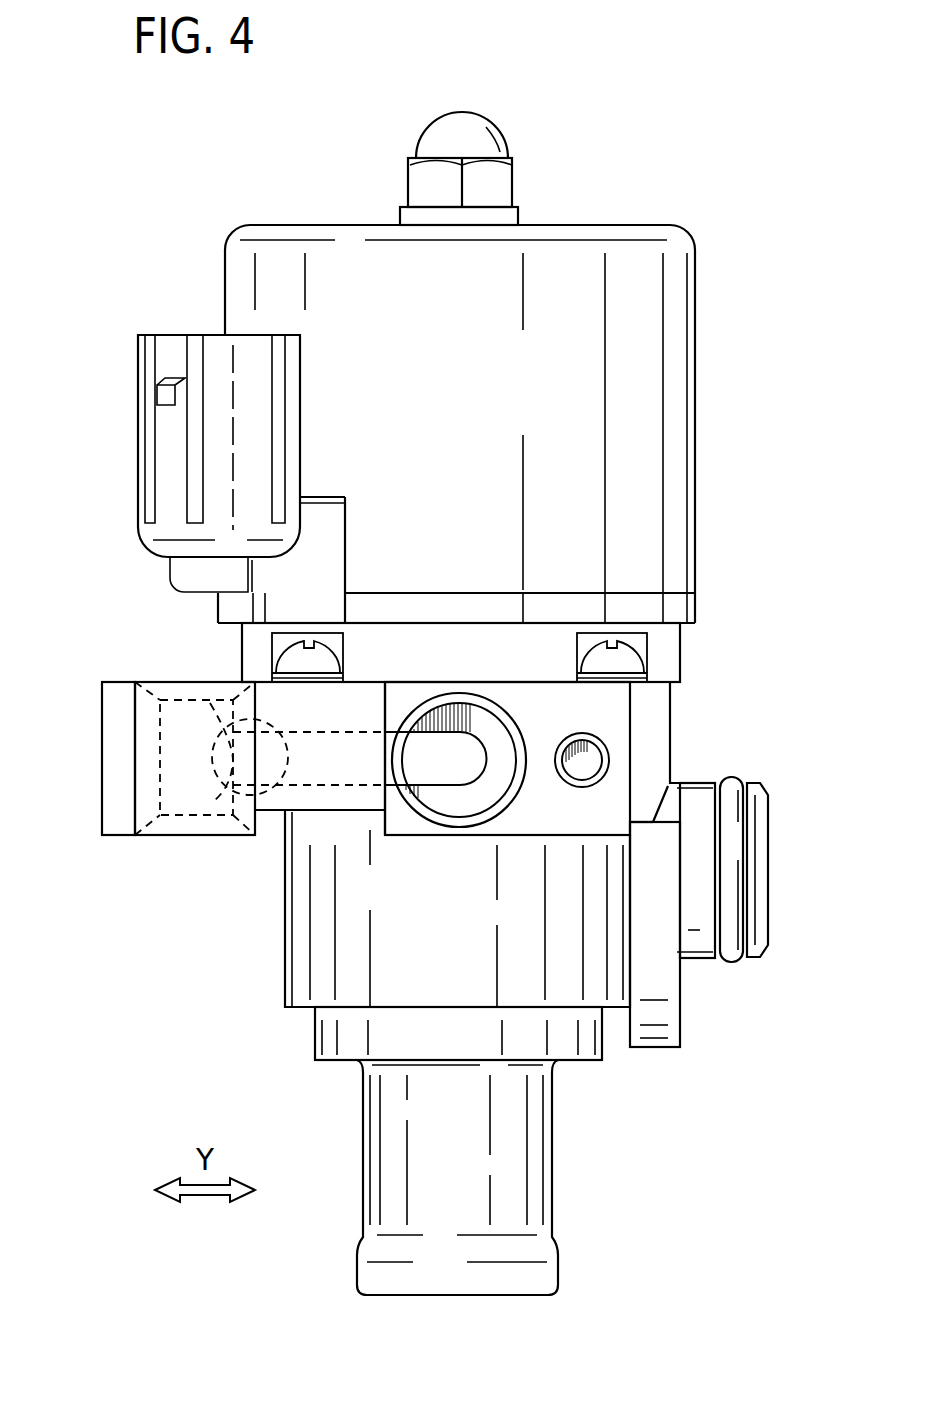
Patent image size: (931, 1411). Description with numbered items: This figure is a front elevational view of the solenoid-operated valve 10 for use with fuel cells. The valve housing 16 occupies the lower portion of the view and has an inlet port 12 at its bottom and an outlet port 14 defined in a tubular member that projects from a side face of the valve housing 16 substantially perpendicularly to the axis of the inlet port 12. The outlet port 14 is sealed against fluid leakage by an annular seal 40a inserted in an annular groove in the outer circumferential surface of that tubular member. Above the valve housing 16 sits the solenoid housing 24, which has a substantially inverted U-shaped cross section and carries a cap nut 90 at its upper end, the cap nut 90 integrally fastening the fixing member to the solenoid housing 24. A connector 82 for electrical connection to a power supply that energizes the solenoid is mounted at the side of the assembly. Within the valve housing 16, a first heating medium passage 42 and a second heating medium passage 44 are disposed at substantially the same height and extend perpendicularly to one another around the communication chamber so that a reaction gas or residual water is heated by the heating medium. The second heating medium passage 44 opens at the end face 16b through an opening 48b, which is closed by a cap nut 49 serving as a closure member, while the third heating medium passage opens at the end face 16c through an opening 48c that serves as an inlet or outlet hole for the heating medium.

The solenoid-operated valve 10 is at (600, 58).
The cap nut 90 is at (457, 128).
The solenoid housing 24 is at (584, 238).
The connector 82 is at (160, 333).
The cap nut 49 is at (110, 763).
The end face 16b is at (186, 782).
The opening 48b is at (142, 743).
The first heating medium passage 42 is at (228, 745).
The second heating medium passage 44 is at (300, 785).
The end face 16c is at (612, 728).
The opening 48c is at (512, 751).
The outlet port 14 is at (768, 853).
The annular seal 40a is at (733, 962).
The valve housing 16 is at (300, 957).
The inlet port 12 is at (448, 1297).